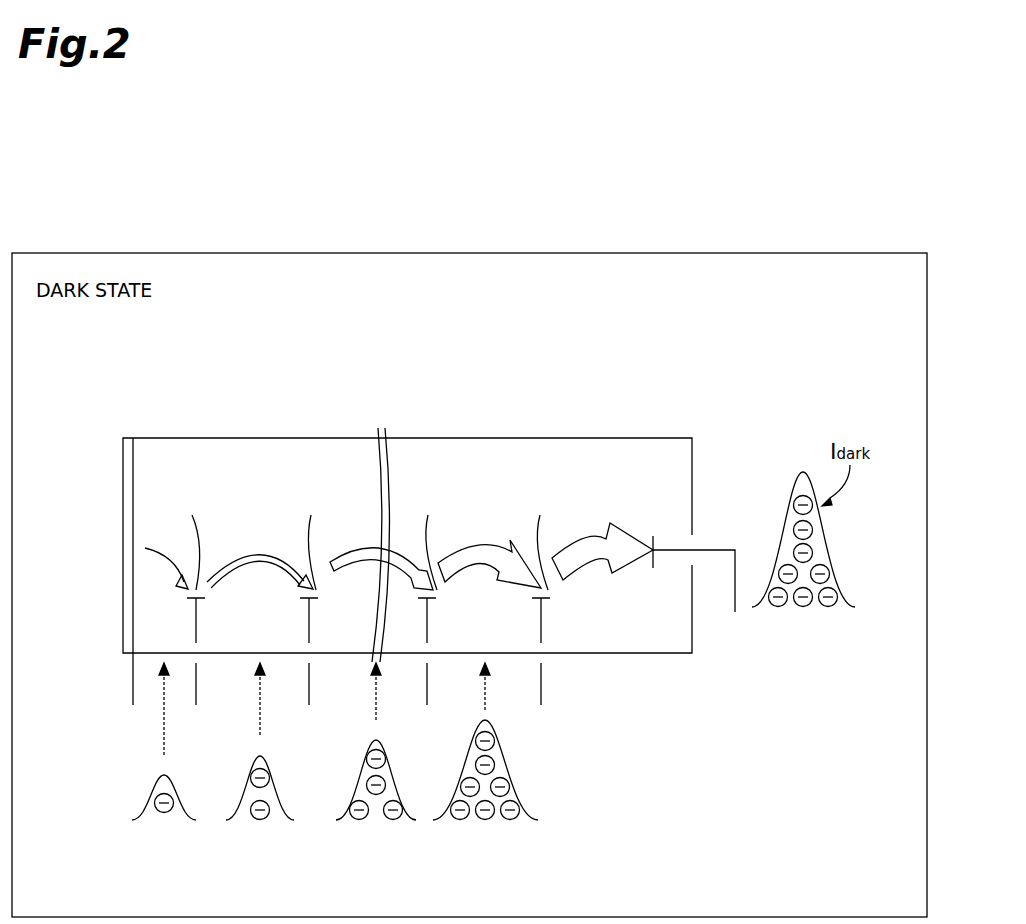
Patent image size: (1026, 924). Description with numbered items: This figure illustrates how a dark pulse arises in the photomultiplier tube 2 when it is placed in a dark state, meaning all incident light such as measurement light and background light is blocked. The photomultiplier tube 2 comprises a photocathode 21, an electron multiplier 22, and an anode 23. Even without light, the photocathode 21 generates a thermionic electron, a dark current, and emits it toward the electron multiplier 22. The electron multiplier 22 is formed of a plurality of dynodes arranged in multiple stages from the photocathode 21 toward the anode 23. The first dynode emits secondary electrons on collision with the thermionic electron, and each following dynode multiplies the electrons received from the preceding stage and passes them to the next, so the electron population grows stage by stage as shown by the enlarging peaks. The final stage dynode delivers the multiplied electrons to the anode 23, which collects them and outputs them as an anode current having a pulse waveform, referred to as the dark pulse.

The photomultiplier tube 2 is at (612, 428).
The photocathode 21 is at (124, 437).
The electron multiplier 22 is at (440, 452).
The anode 23 is at (652, 538).